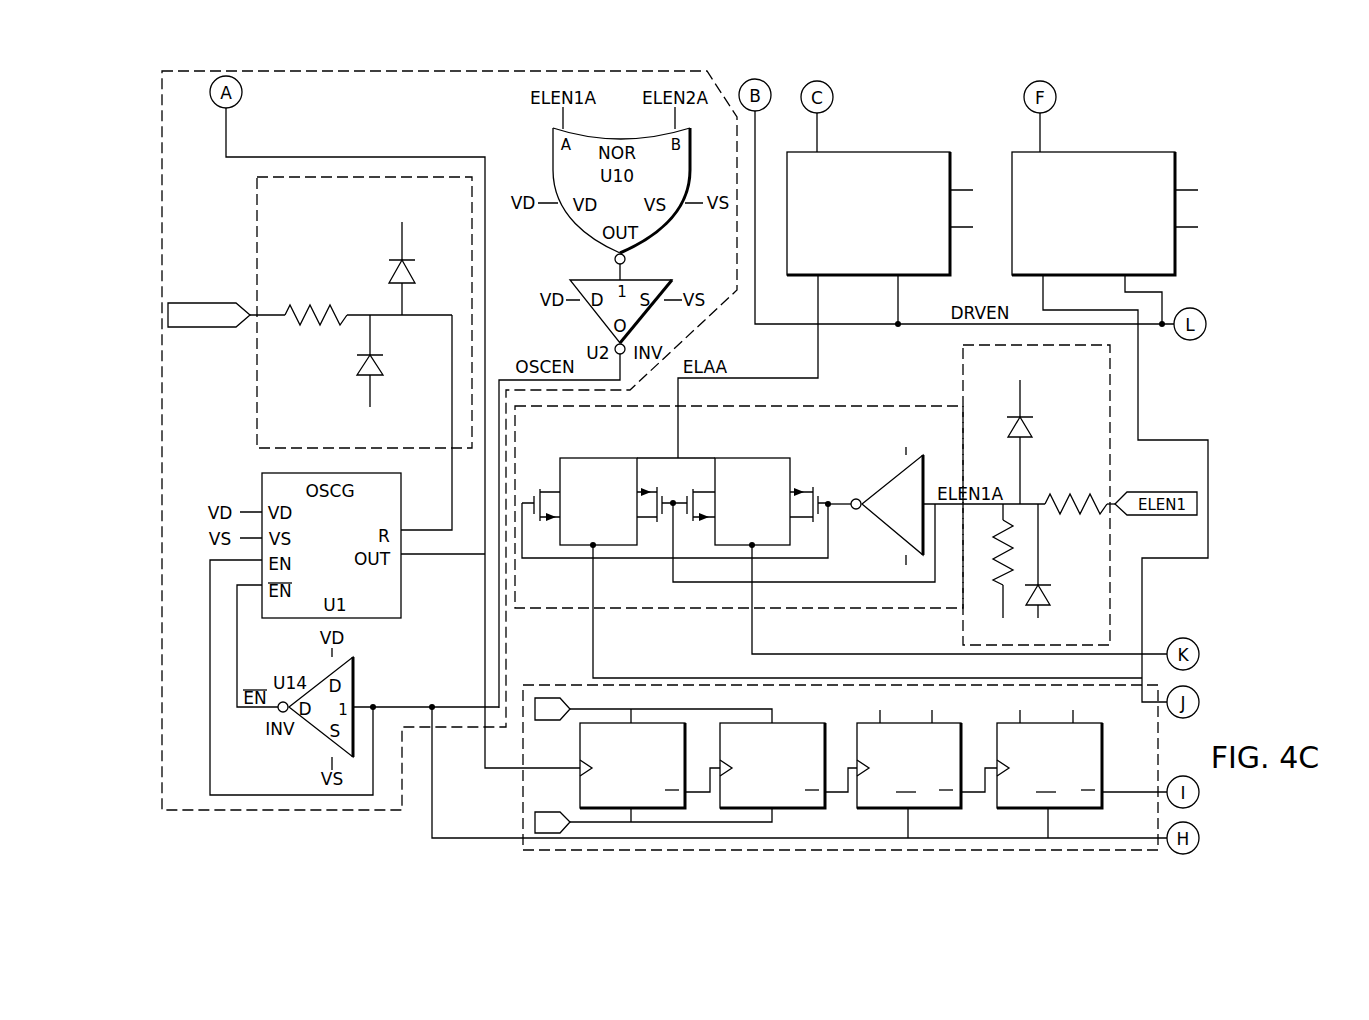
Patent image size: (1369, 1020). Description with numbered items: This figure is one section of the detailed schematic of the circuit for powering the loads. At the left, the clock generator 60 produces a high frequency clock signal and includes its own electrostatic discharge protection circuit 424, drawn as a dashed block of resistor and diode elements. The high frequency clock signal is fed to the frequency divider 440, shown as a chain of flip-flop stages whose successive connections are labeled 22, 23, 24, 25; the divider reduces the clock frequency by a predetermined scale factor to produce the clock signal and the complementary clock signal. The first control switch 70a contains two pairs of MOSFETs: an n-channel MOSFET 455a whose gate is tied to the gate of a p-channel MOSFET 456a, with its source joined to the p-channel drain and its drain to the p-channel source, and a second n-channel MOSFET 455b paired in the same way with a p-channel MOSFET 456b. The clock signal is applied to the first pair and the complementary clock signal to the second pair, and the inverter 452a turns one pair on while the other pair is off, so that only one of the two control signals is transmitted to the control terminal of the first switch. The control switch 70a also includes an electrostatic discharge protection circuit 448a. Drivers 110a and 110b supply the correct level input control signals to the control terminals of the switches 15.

The clock generator 60 is at (172, 810).
The ESD protection circuit 424 is at (257, 255).
The switch 15 is at (387, 373).
The driver 110a is at (893, 152).
The driver 110b is at (1118, 152).
The first control switch 70a is at (885, 406).
The n-channel MOSFET 455a is at (531, 496).
The p-channel MOSFET 456a is at (656, 522).
The n-channel MOSFET 455b is at (686, 497).
The p-channel MOSFET 456b is at (818, 496).
The inverter 452a is at (893, 537).
The ESD protection circuit 448a is at (963, 630).
The frequency divider 440 is at (523, 810).
The first flip-flop output connection 22 is at (702, 781).
The second flip-flop output connection 23 is at (841, 781).
The third flip-flop output connection 24 is at (979, 781).
The fourth flip-flop output connection 25 is at (1134, 785).